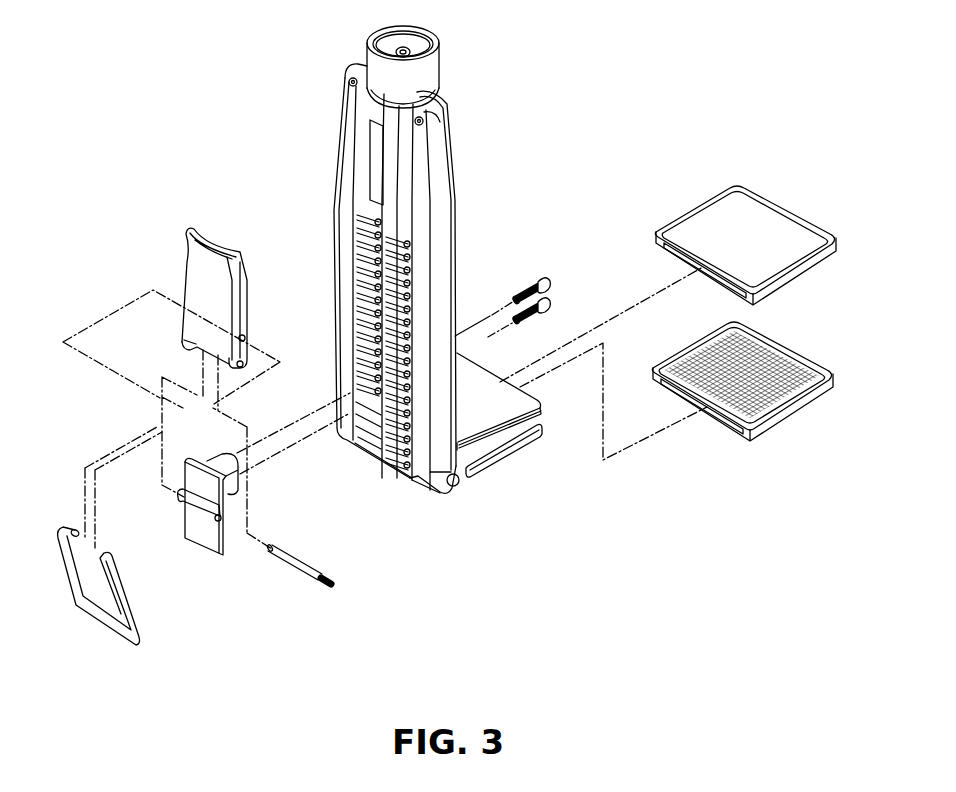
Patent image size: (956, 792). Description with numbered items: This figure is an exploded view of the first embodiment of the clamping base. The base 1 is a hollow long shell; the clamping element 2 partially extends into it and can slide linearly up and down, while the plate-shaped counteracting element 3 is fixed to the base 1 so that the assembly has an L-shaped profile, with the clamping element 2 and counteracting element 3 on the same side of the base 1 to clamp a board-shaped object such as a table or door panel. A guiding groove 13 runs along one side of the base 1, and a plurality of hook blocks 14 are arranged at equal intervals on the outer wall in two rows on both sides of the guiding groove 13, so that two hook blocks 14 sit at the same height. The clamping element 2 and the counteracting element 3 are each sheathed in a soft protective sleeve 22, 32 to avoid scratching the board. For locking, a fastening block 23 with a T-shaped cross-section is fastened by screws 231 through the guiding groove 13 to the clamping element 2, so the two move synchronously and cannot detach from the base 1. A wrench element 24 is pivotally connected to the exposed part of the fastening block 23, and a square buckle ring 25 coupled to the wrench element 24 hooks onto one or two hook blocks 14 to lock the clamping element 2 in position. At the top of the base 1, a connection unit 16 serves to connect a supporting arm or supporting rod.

The base 1 is at (440, 190).
The clamping element 2 is at (523, 400).
The counteracting element 3 is at (510, 452).
The guiding groove 13 is at (375, 180).
The hook blocks 14 is at (360, 237).
The connection unit 16 is at (428, 72).
The protective sleeve 22 is at (780, 212).
The fastening block 23 is at (201, 545).
The wrench element 24 is at (205, 285).
The buckle ring 25 is at (100, 621).
The protective sleeve 32 is at (792, 428).
The screws 231 is at (551, 282).